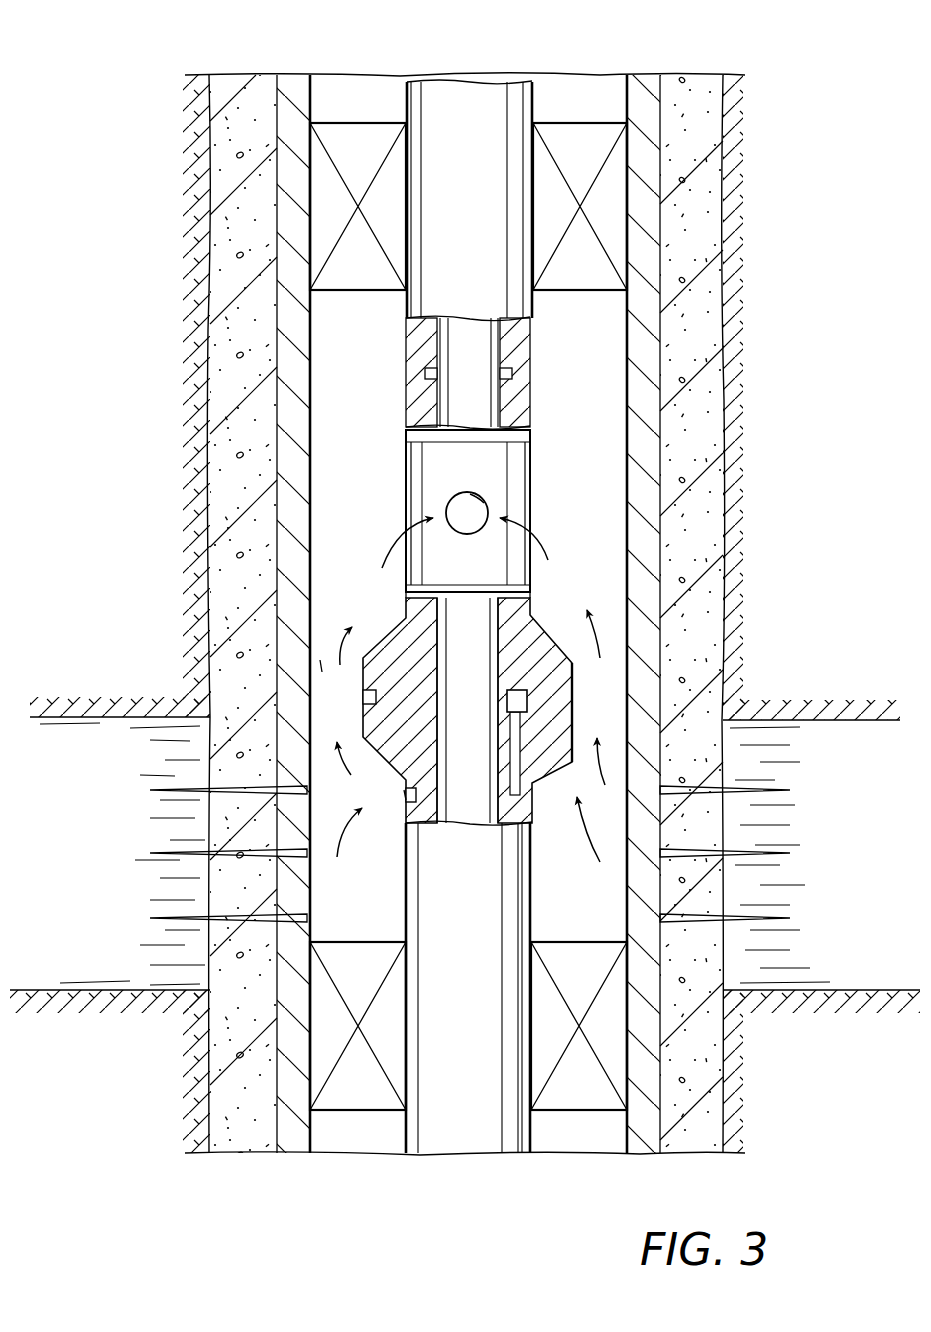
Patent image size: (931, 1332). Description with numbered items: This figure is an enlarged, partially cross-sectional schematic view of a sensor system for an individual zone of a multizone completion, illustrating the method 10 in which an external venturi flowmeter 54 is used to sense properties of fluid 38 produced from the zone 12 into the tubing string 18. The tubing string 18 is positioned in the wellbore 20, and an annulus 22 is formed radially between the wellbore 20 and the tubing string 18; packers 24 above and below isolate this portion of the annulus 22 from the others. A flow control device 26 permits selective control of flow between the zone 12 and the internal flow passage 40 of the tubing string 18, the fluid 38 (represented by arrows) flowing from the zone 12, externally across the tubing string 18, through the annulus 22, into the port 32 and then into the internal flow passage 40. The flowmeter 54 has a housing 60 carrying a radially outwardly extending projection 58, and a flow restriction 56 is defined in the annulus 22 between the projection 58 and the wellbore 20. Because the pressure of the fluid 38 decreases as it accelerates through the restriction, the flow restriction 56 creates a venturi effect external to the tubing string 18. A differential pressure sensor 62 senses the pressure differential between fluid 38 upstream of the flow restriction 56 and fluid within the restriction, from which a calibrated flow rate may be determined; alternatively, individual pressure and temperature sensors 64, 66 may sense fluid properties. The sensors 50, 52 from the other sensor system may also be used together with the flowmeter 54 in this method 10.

The method 10 is at (777, 61).
The zone 12 is at (862, 740).
The tubing string 18 is at (537, 897).
The wellbore 20 is at (315, 340).
The annulus 22 is at (600, 312).
The packers 24 is at (310, 216).
The flow control device 26 is at (410, 467).
The port 32 is at (480, 500).
The fluid 38 is at (760, 580).
The internal flow passage 40 is at (484, 372).
The sensor 50 is at (425, 372).
The sensor 52 is at (512, 373).
The external venturi flowmeter 54 is at (573, 684).
The flow restriction 56 is at (323, 670).
The radially outwardly extending projection 58 is at (404, 793).
The housing 60 is at (542, 595).
The differential pressure sensor 62 is at (507, 700).
The pressure sensor 64 is at (362, 697).
The temperature sensor 66 is at (416, 795).